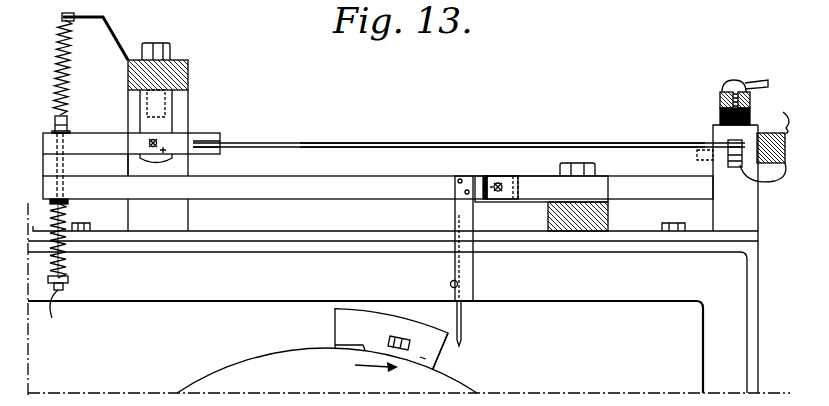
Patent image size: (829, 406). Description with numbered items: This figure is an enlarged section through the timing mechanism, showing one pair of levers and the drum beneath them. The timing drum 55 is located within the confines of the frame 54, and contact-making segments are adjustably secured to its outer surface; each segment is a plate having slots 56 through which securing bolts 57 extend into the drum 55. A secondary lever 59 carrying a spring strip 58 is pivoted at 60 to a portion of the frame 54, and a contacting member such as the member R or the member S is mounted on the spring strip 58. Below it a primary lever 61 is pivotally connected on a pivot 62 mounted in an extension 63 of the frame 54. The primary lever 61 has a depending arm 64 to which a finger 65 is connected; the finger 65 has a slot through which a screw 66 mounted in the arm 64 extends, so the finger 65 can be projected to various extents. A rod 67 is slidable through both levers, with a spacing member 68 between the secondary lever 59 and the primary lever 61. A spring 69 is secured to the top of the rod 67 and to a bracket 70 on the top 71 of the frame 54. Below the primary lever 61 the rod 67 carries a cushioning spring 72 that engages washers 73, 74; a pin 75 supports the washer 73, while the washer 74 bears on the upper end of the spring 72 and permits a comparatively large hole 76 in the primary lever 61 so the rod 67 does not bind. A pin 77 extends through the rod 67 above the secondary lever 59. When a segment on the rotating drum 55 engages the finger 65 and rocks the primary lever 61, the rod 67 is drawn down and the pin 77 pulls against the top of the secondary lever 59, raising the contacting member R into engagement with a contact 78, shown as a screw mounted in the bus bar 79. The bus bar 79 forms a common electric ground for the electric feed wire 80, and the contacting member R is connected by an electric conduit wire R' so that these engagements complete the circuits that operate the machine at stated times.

The frame 54 is at (606, 302).
The timing drum 55 is at (222, 370).
The slots 56 is at (366, 343).
The securing bolts 57 is at (393, 338).
The spring strips 58 is at (479, 147).
The secondary levers 59 is at (469, 133).
The pivot 60 is at (165, 150).
The primary levers 61 is at (212, 153).
The pivots 62 is at (499, 183).
The extensions 63 is at (588, 191).
The depending arms 64 is at (473, 268).
The fingers 65 is at (462, 325).
The screws 66 is at (450, 284).
The rod 67 is at (67, 128).
The spacing member 68 is at (70, 170).
The spring 69 is at (72, 61).
The bracket 70 is at (118, 43).
The top 71 is at (190, 77).
The cushioning springs 72 is at (70, 206).
The washers 73 is at (70, 280).
The washers 74 is at (46, 208).
The pins 75 is at (64, 308).
The holes 76 is at (68, 191).
The pins 77 is at (52, 126).
The contacts 78 is at (725, 125).
The bus bar 79 is at (720, 98).
The electric feed wire 80 is at (760, 84).
The contacting member R is at (727, 163).
The electric conduit wire R' is at (773, 130).
The contacting member S is at (444, 350).